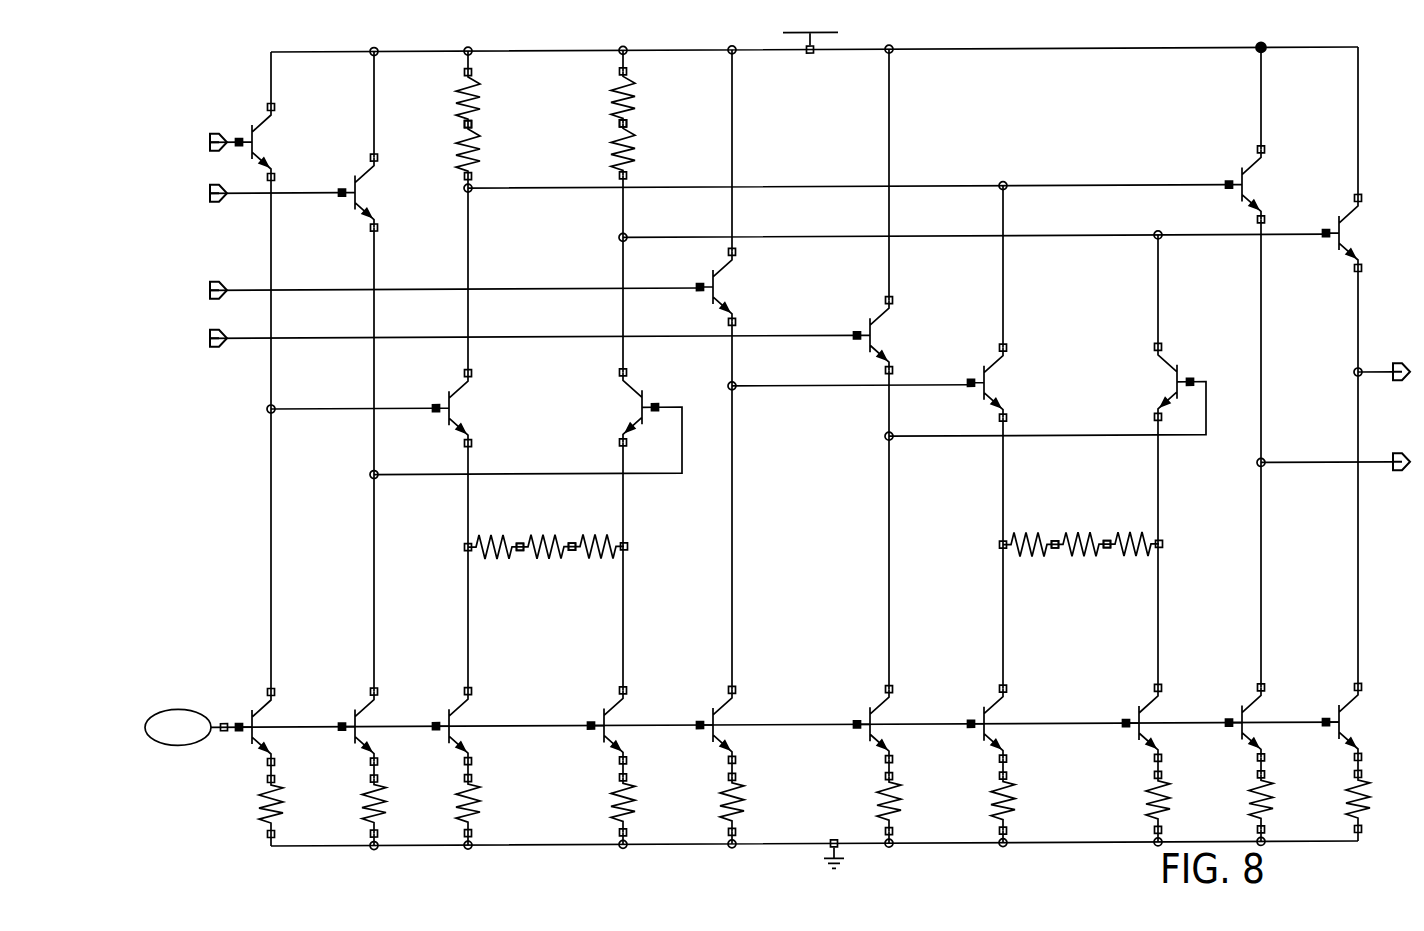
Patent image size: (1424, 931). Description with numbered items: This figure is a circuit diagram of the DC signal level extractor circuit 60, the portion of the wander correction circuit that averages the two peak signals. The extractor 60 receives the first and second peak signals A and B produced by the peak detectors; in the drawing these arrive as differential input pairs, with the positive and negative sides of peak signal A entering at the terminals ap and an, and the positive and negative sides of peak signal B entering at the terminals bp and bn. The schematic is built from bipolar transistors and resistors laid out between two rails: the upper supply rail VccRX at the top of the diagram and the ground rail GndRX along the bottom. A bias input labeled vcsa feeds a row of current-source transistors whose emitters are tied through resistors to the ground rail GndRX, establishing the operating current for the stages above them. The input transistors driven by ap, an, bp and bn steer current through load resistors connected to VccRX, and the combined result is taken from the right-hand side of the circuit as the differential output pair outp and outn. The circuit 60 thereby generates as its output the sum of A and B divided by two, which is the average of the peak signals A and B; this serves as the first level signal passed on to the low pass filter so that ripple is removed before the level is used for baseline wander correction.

The DC signal level extractor circuit 60 is at (780, 451).
The input a positive terminal ap is at (204, 141).
The input a negative terminal an is at (256, 192).
The input b positive terminal bp is at (435, 288).
The input b negative terminal bn is at (513, 335).
The current source bias input vcsa is at (178, 727).
The positive output terminal outp is at (1385, 386).
The negative output terminal outn is at (1336, 445).
The supply voltage rail VccRX is at (809, 26).
The ground rail GndRX is at (850, 870).